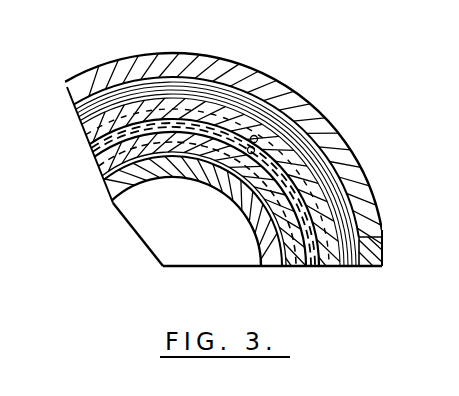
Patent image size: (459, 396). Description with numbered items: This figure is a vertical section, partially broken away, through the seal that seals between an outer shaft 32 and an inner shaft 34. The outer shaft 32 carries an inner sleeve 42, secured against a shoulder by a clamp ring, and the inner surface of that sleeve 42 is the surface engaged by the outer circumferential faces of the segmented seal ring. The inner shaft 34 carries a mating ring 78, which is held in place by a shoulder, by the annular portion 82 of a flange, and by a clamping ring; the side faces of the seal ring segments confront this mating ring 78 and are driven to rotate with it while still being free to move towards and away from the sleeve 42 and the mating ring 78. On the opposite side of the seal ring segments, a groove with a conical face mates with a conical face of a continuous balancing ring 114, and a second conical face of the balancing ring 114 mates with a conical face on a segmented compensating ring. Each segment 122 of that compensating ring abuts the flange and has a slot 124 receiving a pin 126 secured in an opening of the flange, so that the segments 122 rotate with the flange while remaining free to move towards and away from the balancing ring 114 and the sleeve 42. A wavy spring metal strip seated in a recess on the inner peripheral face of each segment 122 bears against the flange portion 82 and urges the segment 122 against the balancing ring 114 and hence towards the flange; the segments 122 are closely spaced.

The outer shaft 32 is at (350, 170).
The inner shaft 34 is at (177, 180).
The inner sleeve 42 is at (348, 204).
The mating ring 78 is at (223, 197).
The annular portion of flange 82 is at (140, 192).
The balancing ring 114 is at (237, 135).
The segment of compensating ring 122 is at (137, 92).
The slot 124 is at (318, 103).
The pin 126 is at (341, 132).